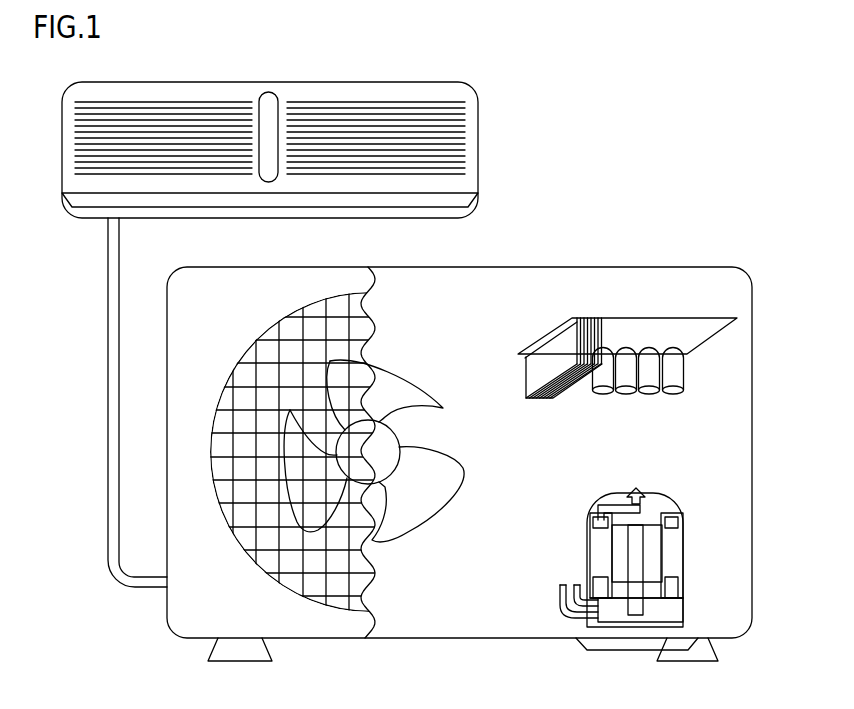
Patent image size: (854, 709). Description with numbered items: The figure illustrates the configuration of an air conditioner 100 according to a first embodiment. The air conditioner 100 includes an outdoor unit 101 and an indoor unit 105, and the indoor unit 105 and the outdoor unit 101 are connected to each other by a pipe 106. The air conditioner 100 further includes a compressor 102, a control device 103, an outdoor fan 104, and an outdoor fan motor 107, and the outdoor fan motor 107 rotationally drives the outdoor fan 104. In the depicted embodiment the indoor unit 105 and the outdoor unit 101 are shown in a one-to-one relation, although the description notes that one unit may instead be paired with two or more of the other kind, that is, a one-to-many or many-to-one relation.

The air conditioner 100 is at (699, 91).
The outdoor unit 101 is at (606, 268).
The compressor 102 is at (687, 552).
The control device 103 is at (713, 318).
The outdoor fan 104 is at (405, 368).
The indoor unit 105 is at (373, 82).
The pipe 106 is at (108, 332).
The outdoor fan motor 107 is at (398, 433).